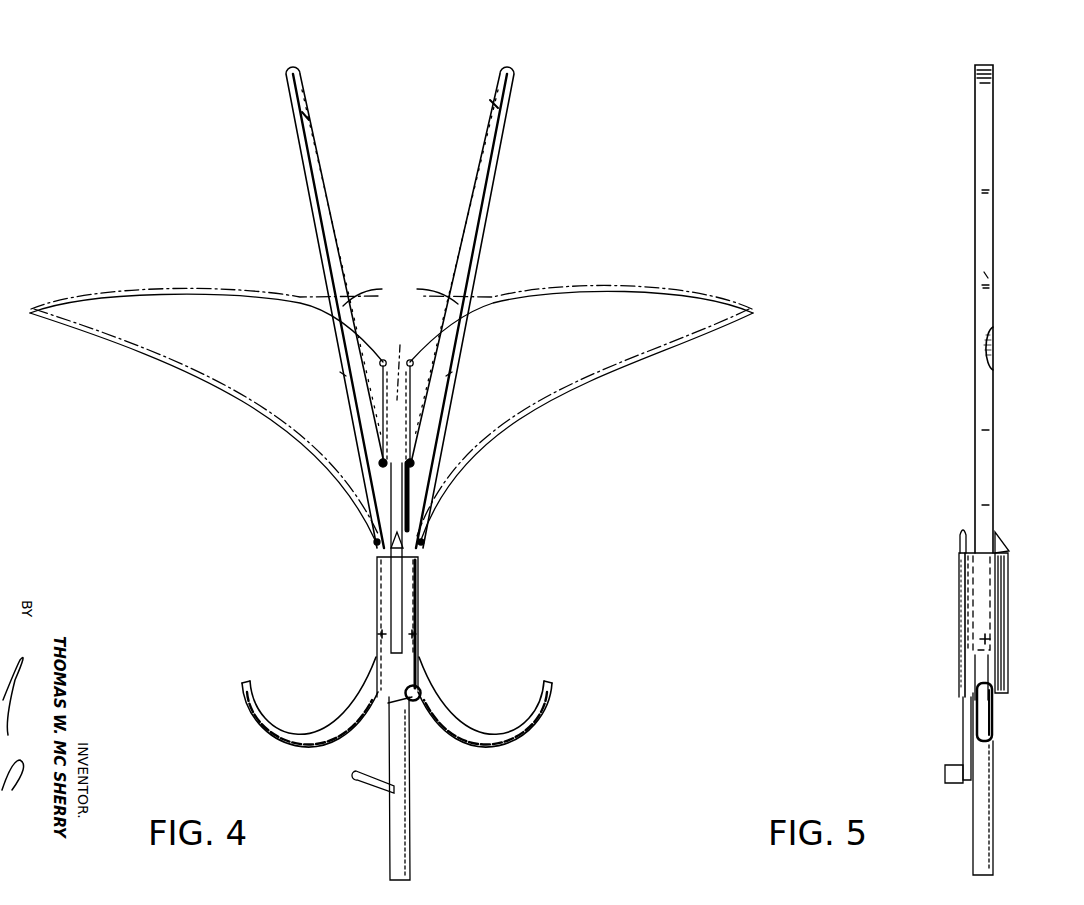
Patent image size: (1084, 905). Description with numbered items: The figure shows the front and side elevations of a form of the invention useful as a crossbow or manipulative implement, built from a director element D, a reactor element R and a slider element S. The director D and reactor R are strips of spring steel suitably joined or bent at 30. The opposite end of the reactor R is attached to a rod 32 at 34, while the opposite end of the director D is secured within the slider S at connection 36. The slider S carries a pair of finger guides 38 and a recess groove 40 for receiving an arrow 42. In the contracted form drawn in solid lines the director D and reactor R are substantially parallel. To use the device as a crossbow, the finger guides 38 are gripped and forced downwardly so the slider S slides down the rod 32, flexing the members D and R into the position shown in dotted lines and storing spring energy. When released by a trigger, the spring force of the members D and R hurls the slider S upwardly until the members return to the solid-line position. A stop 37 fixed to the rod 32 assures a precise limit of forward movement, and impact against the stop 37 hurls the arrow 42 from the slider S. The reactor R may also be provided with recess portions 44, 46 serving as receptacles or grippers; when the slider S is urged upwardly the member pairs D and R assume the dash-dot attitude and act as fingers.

In FIG. 4, the joined or bent end 30 is at (287, 69).
In FIG. 5, the joined or bent end 30 is at (988, 66).
In FIG. 4, the rod 32 is at (412, 322).
In FIG. 5, the rod 32 is at (990, 832).
In FIG. 4, the attachment point 34 is at (381, 461).
In FIG. 4, the connection 36 is at (384, 633).
In FIG. 5, the connection 36 is at (993, 642).
In FIG. 5, the stop 37 is at (1002, 549).
In FIG. 4, the finger guides 38 is at (269, 737).
In FIG. 5, the finger guides 38 is at (994, 722).
In FIG. 4, the recess groove 40 is at (418, 575).
In FIG. 5, the recess groove 40 is at (960, 593).
In FIG. 4, the arrow 42 is at (376, 542).
In FIG. 5, the arrow 42 is at (961, 548).
In FIG. 4, the recess portion 44 is at (317, 150).
In FIG. 4, the recess portion 46 is at (479, 138).
In FIG. 4, the director element D is at (343, 374).
In FIG. 5, the director element D is at (985, 276).
In FIG. 4, the reactor element R is at (400, 294).
In FIG. 5, the reactor element R is at (993, 349).
In FIG. 4, the slider element S is at (420, 612).
In FIG. 5, the slider element S is at (1009, 614).